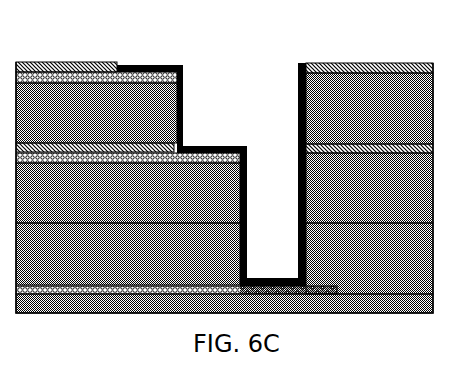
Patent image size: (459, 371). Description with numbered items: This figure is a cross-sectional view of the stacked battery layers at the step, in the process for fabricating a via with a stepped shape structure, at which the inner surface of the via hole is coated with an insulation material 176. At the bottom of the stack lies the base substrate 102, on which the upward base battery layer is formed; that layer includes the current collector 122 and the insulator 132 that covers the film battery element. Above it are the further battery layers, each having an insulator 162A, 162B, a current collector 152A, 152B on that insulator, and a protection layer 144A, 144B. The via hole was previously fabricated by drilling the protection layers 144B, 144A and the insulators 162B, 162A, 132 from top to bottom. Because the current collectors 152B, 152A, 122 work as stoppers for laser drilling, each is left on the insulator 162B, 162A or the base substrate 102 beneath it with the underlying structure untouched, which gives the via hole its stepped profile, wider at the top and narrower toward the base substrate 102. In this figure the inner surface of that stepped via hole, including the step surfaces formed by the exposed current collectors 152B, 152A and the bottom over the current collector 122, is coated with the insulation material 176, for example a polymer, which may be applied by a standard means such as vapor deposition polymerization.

The base substrate 102 is at (387, 294).
The current collector 122 is at (185, 285).
The insulator 132 is at (80, 270).
The protection layer 144A is at (362, 144).
The protection layer 144B is at (376, 63).
The current collector 152A is at (157, 165).
The current collector 152B is at (117, 83).
The insulator 162A is at (90, 205).
The insulator 162B is at (90, 126).
The insulation material 176 is at (182, 120).